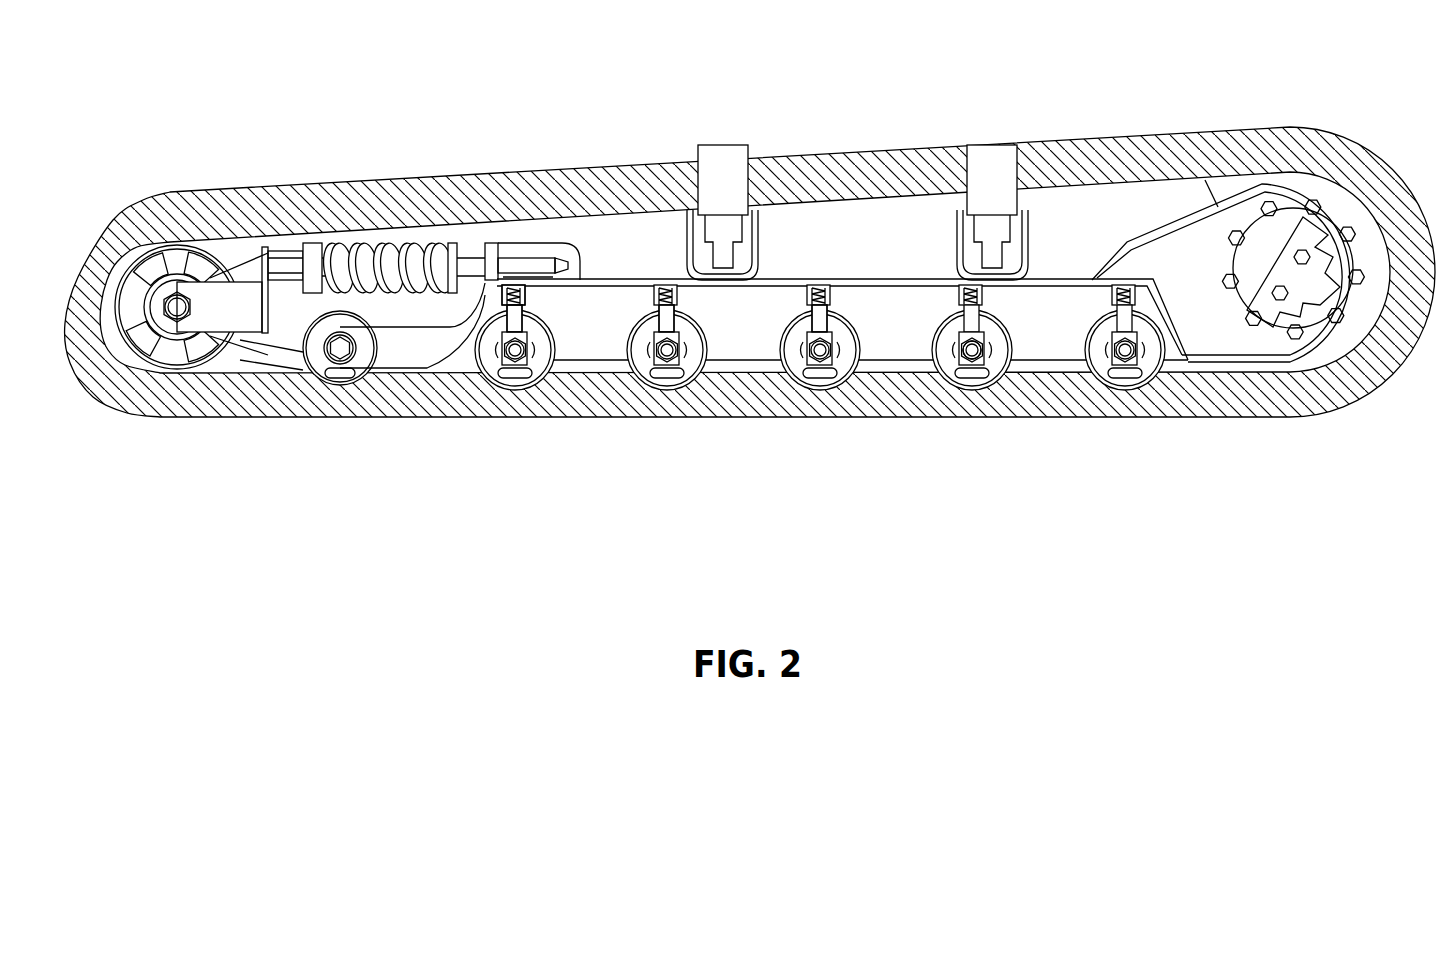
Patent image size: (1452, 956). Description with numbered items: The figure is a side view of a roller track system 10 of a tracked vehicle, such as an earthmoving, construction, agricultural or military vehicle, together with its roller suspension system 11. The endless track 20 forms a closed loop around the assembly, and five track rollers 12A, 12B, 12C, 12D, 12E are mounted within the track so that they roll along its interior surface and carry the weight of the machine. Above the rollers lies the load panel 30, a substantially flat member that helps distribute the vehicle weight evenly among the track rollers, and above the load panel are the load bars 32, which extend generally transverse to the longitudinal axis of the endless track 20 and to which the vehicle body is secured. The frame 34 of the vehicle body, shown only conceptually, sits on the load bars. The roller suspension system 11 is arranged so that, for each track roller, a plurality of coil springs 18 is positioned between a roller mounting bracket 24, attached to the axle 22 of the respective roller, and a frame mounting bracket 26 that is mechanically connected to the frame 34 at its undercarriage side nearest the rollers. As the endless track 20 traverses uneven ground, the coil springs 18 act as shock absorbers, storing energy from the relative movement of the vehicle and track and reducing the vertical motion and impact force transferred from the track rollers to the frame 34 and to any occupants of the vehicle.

The roller track system 10 is at (166, 120).
The roller suspension system 11 is at (739, 285).
The track roller 12A is at (540, 352).
The track roller 12B is at (695, 353).
The track roller 12C is at (837, 355).
The track roller 12D is at (1002, 350).
The track roller 12E is at (1097, 357).
The coil spring 18 is at (520, 303).
The endless track 20 is at (532, 182).
The axle 22 is at (972, 350).
The roller mounting bracket 24 is at (822, 327).
The frame mounting bracket 26 is at (520, 296).
The load panel 30 is at (642, 283).
The load bars 32 is at (957, 242).
The frame 34 is at (988, 150).